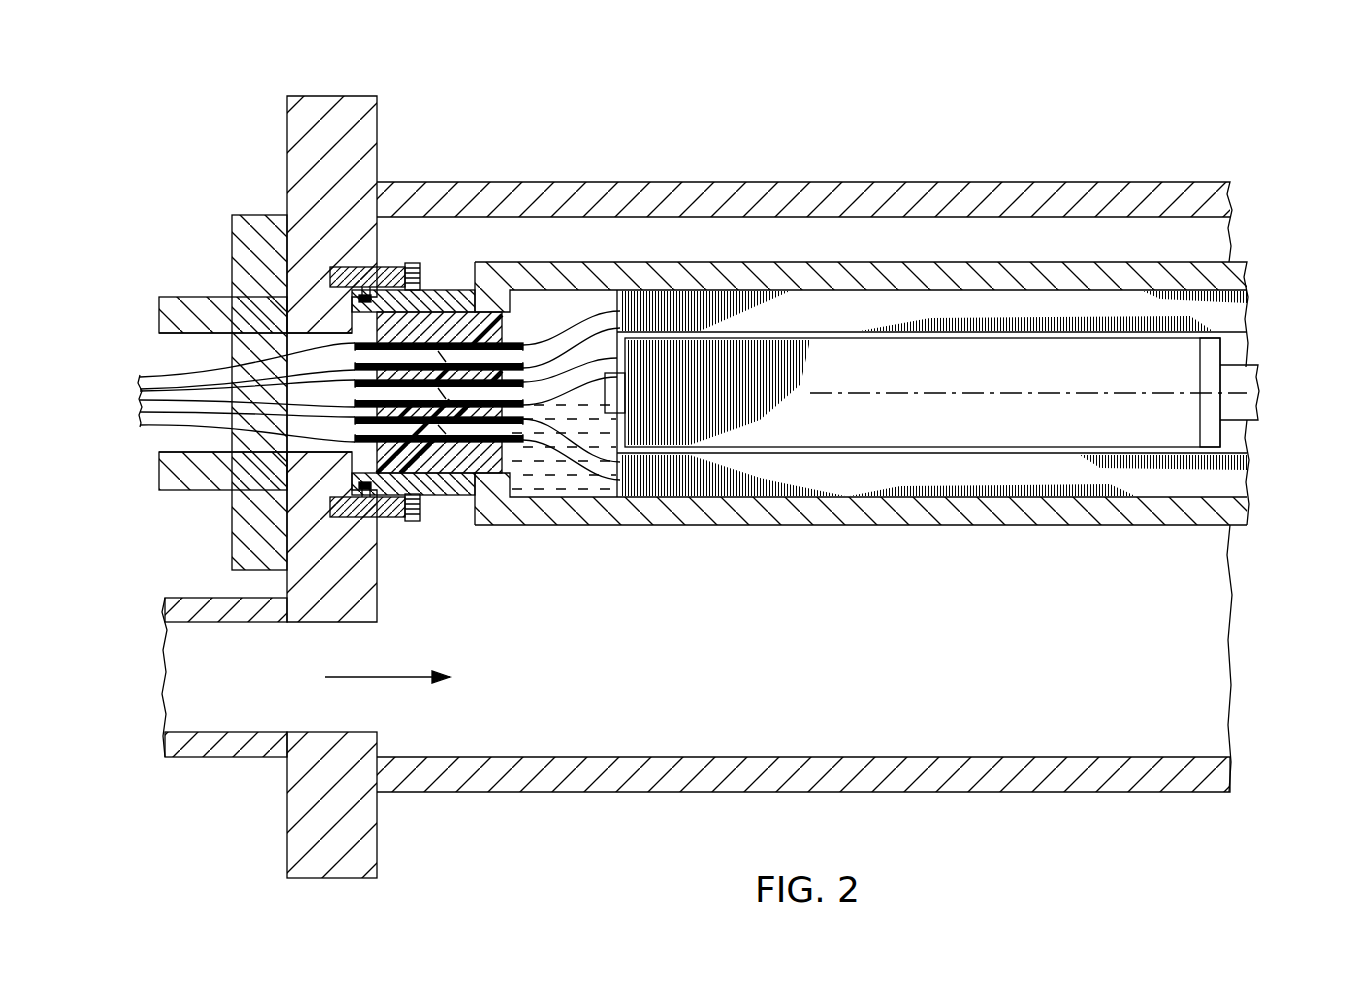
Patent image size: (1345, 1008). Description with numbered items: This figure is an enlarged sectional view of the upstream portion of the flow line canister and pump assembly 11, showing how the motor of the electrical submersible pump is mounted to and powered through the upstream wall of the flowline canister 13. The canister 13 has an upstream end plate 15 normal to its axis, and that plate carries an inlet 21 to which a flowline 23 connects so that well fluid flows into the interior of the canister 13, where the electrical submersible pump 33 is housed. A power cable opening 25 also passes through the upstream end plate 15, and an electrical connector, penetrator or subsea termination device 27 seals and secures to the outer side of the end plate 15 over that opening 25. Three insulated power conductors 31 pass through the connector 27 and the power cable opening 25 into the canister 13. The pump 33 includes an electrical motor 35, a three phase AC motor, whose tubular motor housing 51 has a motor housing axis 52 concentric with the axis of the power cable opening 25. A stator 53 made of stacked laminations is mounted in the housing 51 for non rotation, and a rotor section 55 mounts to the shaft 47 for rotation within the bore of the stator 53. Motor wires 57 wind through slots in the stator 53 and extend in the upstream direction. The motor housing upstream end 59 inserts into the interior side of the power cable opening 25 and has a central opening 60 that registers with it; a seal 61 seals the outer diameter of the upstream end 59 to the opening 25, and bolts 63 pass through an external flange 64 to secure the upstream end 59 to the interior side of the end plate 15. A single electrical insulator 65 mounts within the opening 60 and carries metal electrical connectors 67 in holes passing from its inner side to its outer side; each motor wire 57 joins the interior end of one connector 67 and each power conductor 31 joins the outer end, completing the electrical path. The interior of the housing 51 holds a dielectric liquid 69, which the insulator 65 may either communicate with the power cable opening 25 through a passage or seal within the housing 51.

The fluid heater assembly 11 is at (882, 90).
The flowline canister 13 is at (1095, 180).
The upstream end plate 15 is at (377, 122).
The inlet 21 is at (352, 622).
The flowline 23 is at (215, 597).
The power cable opening 25 is at (297, 336).
The electrical connector 27 is at (212, 295).
The power conductors 31 is at (190, 427).
The electrical submersible pump 33 is at (958, 528).
The electrical motor 35 is at (758, 517).
The shaft 47 is at (1240, 378).
The motor housing 51 is at (798, 277).
The motor housing axis 52 is at (832, 390).
The stator 53 is at (932, 300).
The rotor section 55 is at (1173, 357).
The motor wires 57 is at (565, 313).
The motor housing upstream end 59 is at (278, 254).
The central opening 60 is at (442, 310).
The seal 61 is at (370, 298).
The bolts 63 is at (407, 263).
The external flange 64 is at (390, 523).
The electrical insulator 65 is at (438, 467).
The electrical connector 67 is at (477, 463).
The dielectric liquid 69 is at (577, 483).